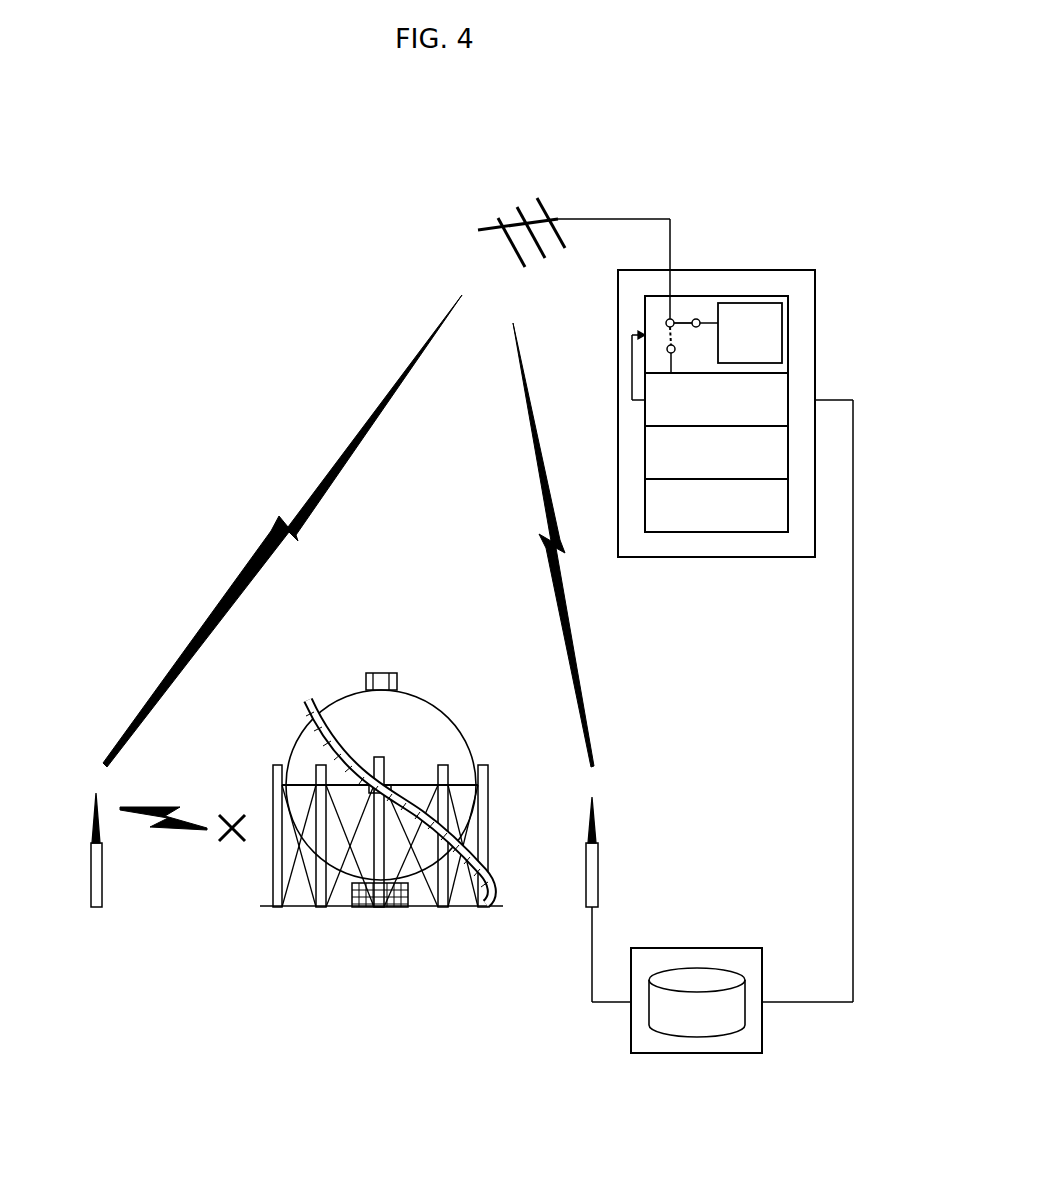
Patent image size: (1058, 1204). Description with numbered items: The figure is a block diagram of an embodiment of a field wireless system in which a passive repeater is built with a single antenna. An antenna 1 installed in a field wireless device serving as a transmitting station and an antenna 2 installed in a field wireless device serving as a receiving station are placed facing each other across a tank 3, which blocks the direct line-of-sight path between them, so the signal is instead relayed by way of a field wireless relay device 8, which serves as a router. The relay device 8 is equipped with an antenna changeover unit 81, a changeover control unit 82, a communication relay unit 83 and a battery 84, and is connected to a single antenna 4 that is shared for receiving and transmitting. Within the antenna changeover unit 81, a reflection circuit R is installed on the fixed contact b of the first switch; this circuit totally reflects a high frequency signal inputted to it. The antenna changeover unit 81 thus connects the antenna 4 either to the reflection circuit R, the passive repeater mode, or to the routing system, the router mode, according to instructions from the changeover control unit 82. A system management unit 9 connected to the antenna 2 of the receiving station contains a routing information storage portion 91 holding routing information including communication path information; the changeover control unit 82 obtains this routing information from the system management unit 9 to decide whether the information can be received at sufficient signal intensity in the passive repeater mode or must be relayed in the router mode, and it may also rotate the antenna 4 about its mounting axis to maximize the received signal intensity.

The antenna 1 is at (102, 873).
The antenna 2 is at (585, 884).
The tank 3 is at (465, 733).
The antenna 4 is at (537, 213).
The field wireless relay device 8 is at (708, 268).
The antenna changeover unit 81 is at (645, 322).
The changeover control unit 82 is at (645, 412).
The communication relay unit 83 is at (645, 453).
The battery 84 is at (645, 505).
The system management unit 9 is at (643, 947).
The routing information storage portion 91 is at (702, 994).